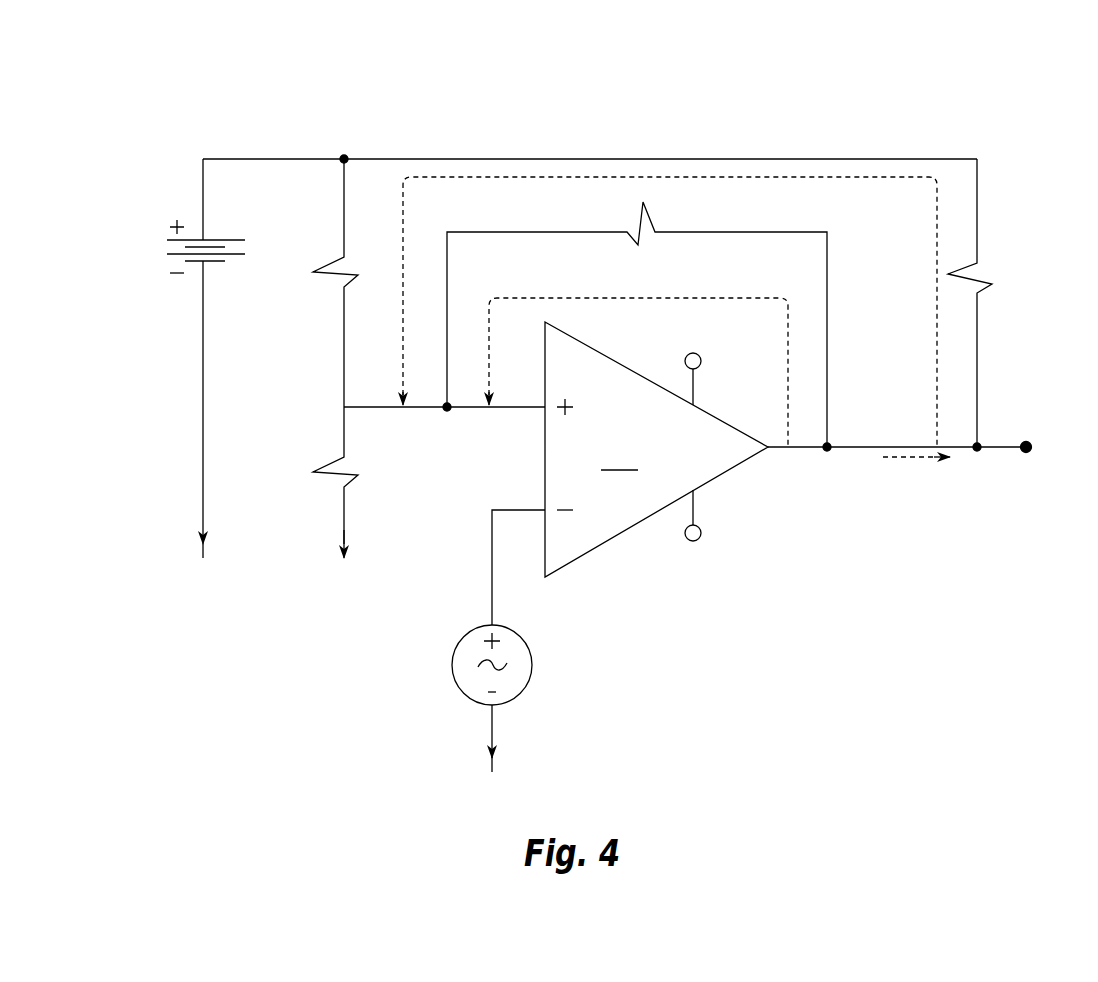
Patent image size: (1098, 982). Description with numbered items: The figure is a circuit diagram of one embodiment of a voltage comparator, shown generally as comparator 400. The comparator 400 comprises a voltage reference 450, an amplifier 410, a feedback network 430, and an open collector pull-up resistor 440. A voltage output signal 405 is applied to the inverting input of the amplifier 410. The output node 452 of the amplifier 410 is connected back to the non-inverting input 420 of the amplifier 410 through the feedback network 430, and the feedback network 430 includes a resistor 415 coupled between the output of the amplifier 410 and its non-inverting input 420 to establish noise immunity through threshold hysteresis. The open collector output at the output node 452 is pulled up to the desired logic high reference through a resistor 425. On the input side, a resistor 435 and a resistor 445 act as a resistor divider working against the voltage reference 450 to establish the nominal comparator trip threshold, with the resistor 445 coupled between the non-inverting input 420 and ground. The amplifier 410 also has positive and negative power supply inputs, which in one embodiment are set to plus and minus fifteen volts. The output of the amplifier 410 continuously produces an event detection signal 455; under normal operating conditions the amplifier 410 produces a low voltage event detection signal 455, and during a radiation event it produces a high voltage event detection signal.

The comparator 400 is at (655, 82).
The voltage output signal 405 is at (534, 667).
The amplifier 410 is at (656, 450).
The resistor 415 is at (652, 238).
The non-inverting input 420 is at (444, 413).
The resistor 425 is at (985, 274).
The feedback network 430 is at (790, 428).
The resistor 435 is at (330, 285).
The open collector pull-up resistor 440 is at (862, 176).
The resistor 445 is at (330, 487).
The voltage reference 450 is at (165, 220).
The output node 452 is at (1031, 440).
The event detection signal 455 is at (902, 466).